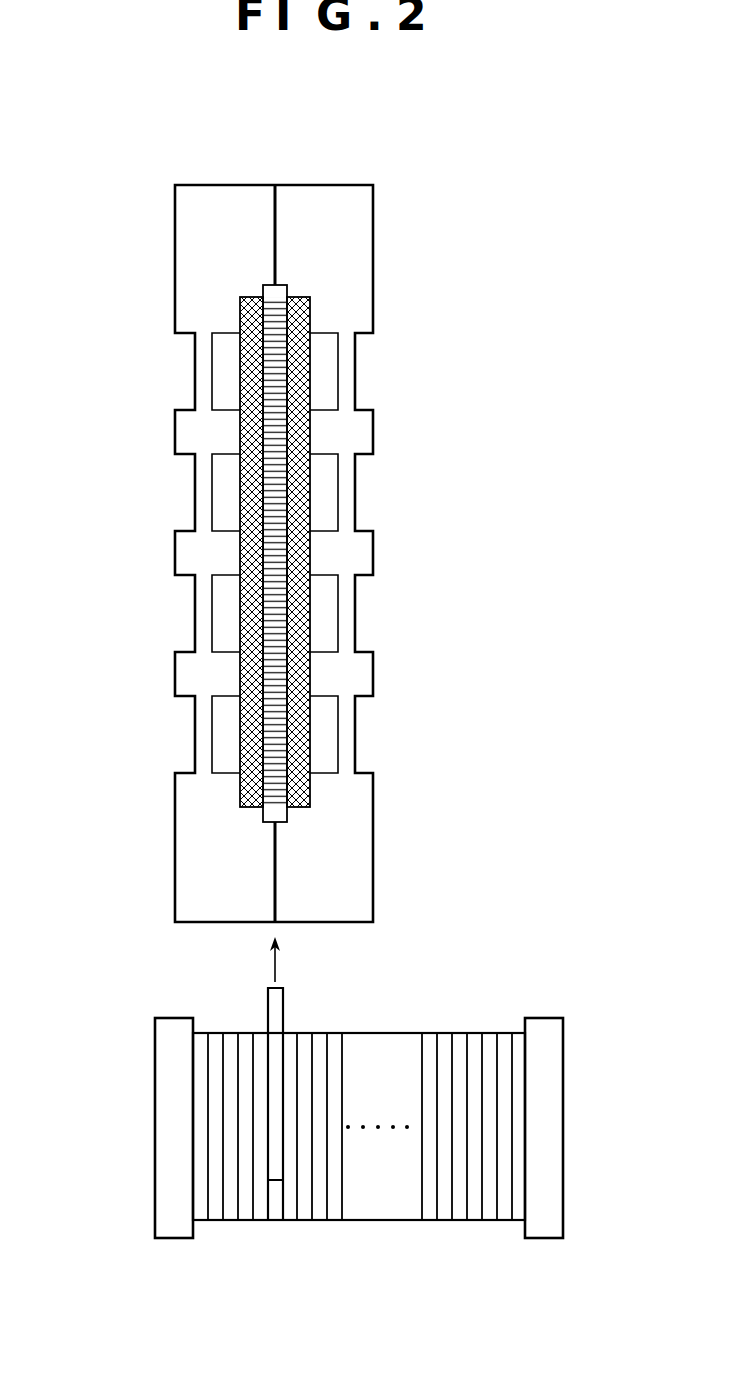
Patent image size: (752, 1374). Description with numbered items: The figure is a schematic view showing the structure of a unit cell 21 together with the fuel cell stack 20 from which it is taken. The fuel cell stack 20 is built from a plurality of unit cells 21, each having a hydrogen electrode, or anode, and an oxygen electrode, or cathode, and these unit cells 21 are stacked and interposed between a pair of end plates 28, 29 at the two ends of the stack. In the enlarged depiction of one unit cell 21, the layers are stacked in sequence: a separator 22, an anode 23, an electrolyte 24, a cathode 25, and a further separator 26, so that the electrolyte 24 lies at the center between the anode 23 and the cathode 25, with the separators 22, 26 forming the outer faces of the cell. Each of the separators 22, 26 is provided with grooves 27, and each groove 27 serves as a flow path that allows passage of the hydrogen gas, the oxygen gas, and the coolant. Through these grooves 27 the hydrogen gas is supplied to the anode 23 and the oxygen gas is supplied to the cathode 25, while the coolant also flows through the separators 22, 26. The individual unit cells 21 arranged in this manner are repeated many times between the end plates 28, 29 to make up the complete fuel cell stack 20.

The fuel cell stack 20 is at (357, 1135).
The unit cell 21 is at (173, 101).
The separator 22 is at (195, 185).
The anode 23 is at (253, 297).
The electrolyte 24 is at (269, 286).
The cathode 25 is at (293, 297).
The separator 26 is at (353, 185).
The groove 27 is at (223, 353).
The end plate 28 is at (155, 1060).
The end plate 29 is at (563, 1057).